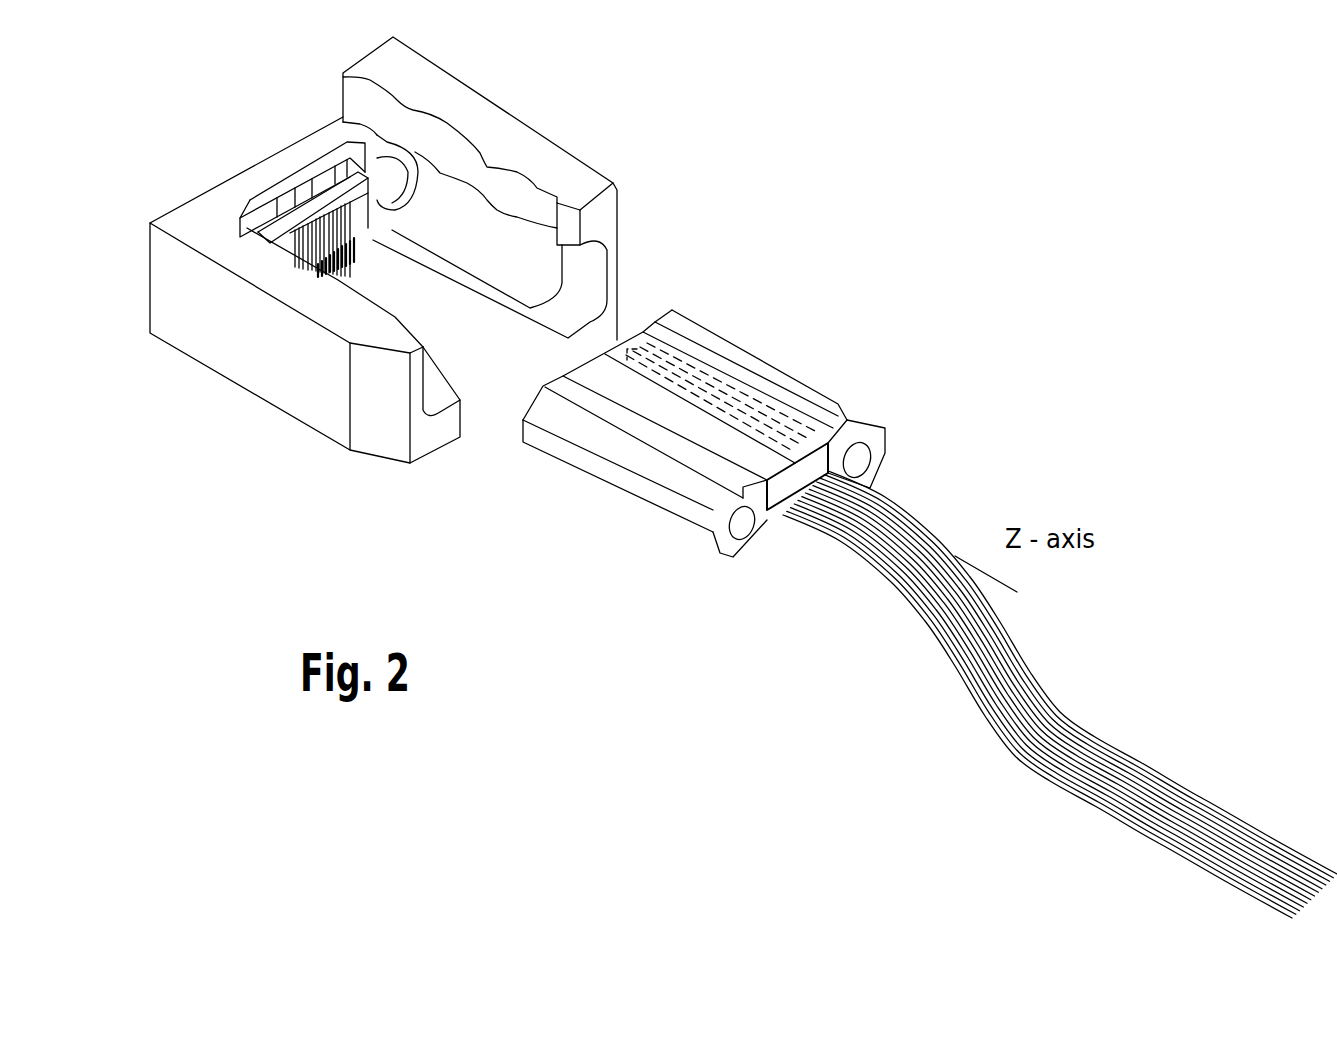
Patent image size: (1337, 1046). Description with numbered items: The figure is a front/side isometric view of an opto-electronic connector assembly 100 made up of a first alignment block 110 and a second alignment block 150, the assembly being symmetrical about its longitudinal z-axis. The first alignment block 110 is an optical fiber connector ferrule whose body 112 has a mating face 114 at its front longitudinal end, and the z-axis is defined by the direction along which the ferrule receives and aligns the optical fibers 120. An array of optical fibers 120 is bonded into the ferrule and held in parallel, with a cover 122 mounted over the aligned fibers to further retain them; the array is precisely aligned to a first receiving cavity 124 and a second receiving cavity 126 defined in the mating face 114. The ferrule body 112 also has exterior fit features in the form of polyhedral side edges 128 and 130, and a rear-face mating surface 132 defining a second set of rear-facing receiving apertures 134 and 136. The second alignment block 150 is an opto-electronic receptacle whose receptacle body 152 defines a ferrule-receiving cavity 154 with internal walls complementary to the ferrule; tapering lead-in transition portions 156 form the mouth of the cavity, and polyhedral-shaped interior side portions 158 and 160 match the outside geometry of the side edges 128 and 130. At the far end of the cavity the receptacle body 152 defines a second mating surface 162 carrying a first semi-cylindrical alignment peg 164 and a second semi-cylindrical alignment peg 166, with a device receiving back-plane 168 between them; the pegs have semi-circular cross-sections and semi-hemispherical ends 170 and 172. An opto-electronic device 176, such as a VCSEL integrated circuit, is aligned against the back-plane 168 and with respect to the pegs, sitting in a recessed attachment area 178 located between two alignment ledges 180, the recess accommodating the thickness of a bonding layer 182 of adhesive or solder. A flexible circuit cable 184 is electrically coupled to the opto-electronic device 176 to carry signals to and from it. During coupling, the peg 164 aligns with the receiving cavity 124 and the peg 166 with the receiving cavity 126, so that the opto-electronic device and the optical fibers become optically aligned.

The connector assembly 100 is at (800, 195).
The first alignment block 110 is at (704, 442).
The body 112 is at (850, 418).
The mating face 114 is at (528, 410).
The optical fibers 120 is at (936, 645).
The cover 122 is at (808, 443).
The first receiving cavity 124 is at (550, 397).
The second receiving cavity 126 is at (645, 338).
The polyhedral side edge 128 is at (598, 475).
The polyhedral side edge 130 is at (787, 372).
The rear-face mating surface 132 is at (872, 478).
The rear-facing receiving aperture 134 is at (743, 530).
The rear-facing receiving aperture 136 is at (866, 452).
The second alignment block 150 is at (278, 62).
The receptacle body 152 is at (497, 108).
The ferrule-receiving cavity 154 is at (443, 370).
The tapering lead-in transition portions 156 is at (600, 258).
The polyhedral-shaped interior side portion 158 is at (431, 340).
The polyhedral-shaped interior side portion 160 is at (532, 263).
The second mating surface 162 is at (360, 272).
The first semi-cylindrical alignment peg 164 is at (290, 253).
The second semi-cylindrical alignment peg 166 is at (365, 142).
The device receiving back-plane 168 is at (364, 198).
The semi-hemispherical end 170 is at (297, 260).
The semi-hemispherical end 172 is at (412, 182).
The opto-electronic device 176 is at (355, 281).
The recessed attachment area 178 is at (295, 205).
The alignment ledges 180 is at (348, 161).
The bonding layer 182 is at (325, 182).
The flexible circuit cable 184 is at (370, 250).